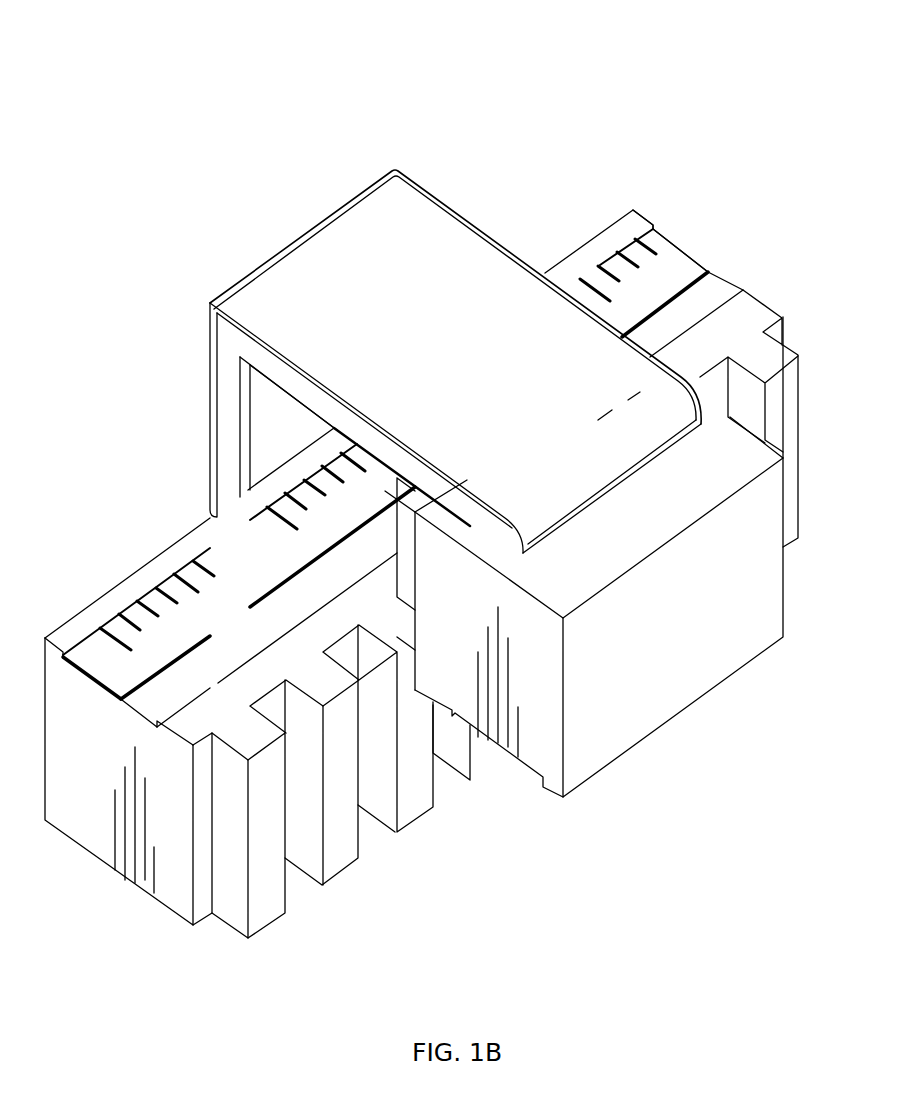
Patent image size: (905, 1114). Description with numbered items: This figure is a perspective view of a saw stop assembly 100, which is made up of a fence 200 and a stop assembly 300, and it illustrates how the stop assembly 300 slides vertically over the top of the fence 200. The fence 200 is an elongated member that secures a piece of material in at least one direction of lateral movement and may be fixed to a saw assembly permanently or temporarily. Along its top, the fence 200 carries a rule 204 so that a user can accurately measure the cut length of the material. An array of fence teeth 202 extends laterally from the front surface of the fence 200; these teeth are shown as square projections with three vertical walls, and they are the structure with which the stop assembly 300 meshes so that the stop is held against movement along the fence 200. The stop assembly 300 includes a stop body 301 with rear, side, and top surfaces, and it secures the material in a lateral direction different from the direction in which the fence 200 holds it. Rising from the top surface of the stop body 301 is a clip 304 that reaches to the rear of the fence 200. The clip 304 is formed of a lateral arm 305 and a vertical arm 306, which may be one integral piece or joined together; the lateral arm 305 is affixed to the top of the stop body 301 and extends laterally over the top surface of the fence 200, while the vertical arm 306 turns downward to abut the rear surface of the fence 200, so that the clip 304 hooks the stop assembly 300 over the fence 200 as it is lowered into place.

The saw stop assembly 100 is at (228, 72).
The fence 200 is at (137, 553).
The fence teeth 202 is at (345, 846).
The rule 204 is at (675, 250).
The stop assembly 300 is at (691, 746).
The stop body 301 is at (702, 643).
The clip 304 is at (481, 203).
The lateral arm 305 is at (451, 339).
The vertical arm 306 is at (207, 432).